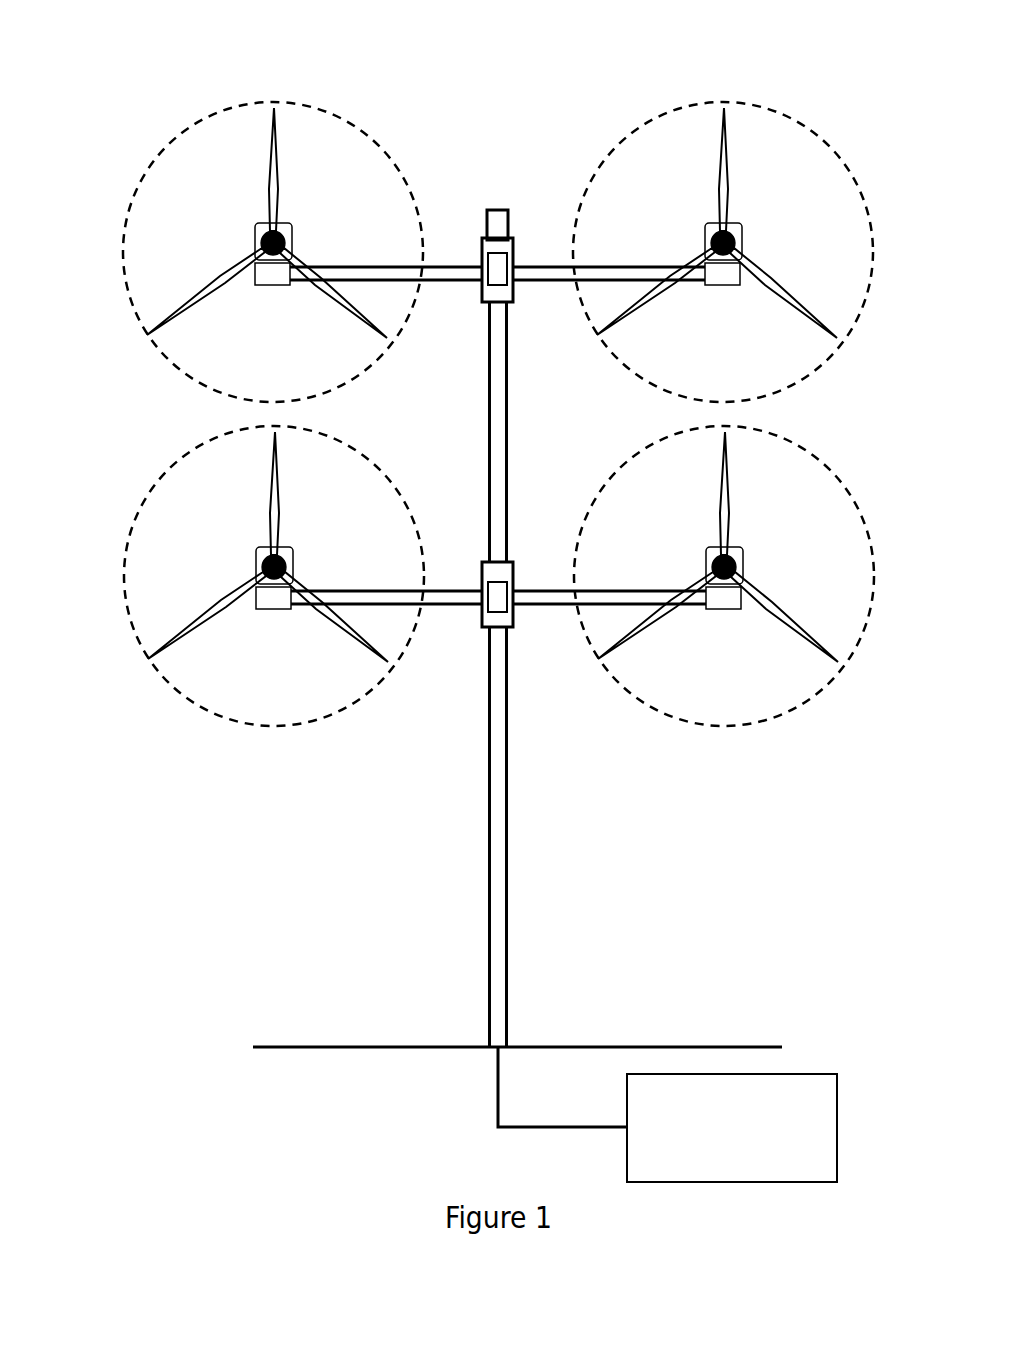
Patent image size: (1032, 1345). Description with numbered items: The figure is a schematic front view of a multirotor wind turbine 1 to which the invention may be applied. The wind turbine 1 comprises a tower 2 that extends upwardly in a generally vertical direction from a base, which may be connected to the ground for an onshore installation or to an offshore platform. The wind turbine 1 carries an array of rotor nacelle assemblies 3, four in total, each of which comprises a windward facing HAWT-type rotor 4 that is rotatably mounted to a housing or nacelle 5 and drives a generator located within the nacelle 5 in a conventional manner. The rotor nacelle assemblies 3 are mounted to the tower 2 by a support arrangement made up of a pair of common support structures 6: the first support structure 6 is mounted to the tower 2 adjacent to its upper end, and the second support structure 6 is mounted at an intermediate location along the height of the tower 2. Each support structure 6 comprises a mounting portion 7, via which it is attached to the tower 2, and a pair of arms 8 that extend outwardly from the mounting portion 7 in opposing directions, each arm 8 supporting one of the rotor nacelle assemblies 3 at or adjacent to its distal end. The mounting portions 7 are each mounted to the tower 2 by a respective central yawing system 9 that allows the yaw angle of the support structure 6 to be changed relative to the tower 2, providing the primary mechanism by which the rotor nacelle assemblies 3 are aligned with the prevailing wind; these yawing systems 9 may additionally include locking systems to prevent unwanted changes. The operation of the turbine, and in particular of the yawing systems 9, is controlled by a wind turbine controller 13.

The multirotor wind turbine 1 is at (300, 910).
The tower 2 is at (497, 947).
The rotor nacelle assembly 3 is at (473, 392).
The rotor 4 is at (214, 223).
The nacelle 5 is at (176, 558).
The support structure 6 is at (531, 415).
The mounting portion 7 is at (478, 243).
The arm 8 is at (398, 265).
The central yawing system 9 is at (500, 290).
The wind turbine controller 13 is at (795, 1072).